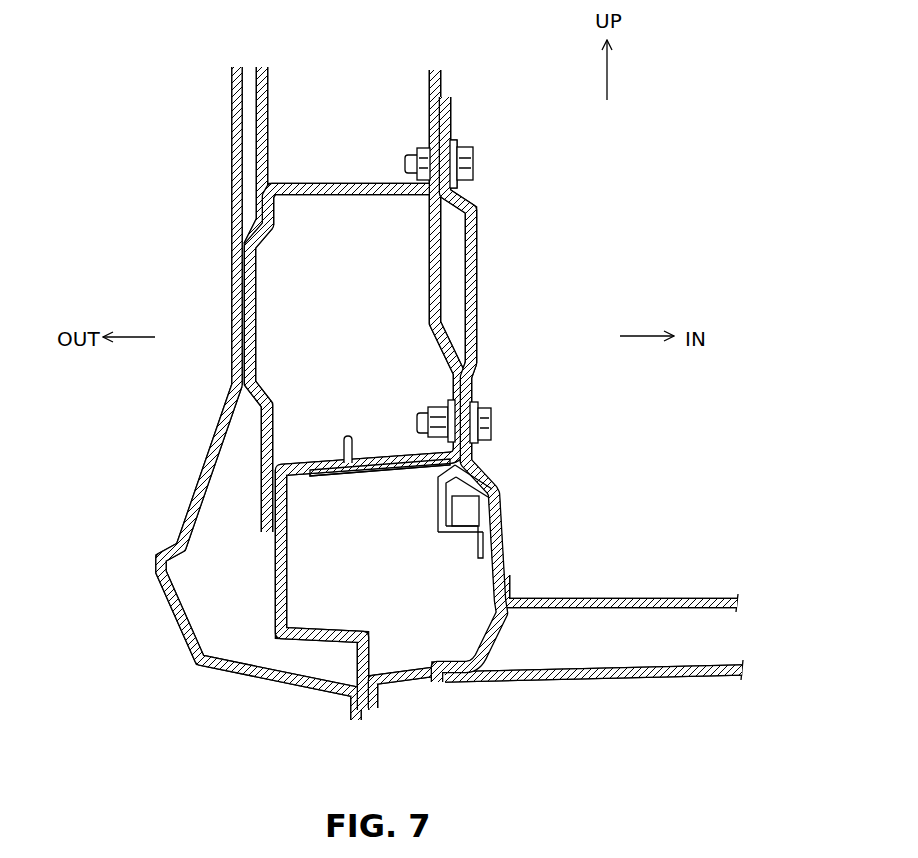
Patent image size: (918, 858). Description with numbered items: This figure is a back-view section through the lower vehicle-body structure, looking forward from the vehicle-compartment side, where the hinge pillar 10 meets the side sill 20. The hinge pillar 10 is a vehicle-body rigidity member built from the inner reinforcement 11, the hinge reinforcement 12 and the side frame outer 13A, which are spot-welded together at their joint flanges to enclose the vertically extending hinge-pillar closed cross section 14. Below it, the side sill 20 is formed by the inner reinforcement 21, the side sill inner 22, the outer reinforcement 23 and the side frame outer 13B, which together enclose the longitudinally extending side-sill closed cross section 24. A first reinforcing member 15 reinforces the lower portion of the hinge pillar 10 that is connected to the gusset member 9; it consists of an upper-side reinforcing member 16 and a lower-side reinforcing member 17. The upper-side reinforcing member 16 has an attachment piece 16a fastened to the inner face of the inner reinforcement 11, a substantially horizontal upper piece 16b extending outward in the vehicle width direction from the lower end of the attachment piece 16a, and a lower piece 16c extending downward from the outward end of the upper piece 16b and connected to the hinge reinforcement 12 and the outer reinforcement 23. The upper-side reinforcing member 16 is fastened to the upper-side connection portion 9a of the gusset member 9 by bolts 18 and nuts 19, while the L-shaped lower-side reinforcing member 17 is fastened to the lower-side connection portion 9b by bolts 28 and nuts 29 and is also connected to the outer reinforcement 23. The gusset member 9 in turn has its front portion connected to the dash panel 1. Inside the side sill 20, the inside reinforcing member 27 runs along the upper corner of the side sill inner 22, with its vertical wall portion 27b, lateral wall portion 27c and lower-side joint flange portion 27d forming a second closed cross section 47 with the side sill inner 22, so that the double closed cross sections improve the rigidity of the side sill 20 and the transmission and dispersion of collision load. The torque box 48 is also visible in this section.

The dash panel 1 is at (627, 597).
The gusset member 9 is at (491, 279).
The upper-side connection portion 9a is at (455, 140).
The lower-side connection portion 9b is at (468, 447).
The hinge pillar 10 is at (221, 393).
The inner reinforcement 11 is at (437, 278).
The hinge reinforcement 12 is at (258, 196).
The side frame outer 13A is at (232, 160).
The side frame outer 13B is at (165, 565).
The hinge-pillar closed cross section 14 is at (361, 295).
The first reinforcing member 15 is at (354, 284).
The upper-side reinforcing member 16 is at (354, 284).
The attachment piece 16a is at (432, 75).
The upper piece 16b is at (340, 197).
The lower piece 16c is at (256, 332).
The lower-side reinforcing member 17 is at (389, 459).
The bolt 18 is at (474, 160).
The nut 19 is at (422, 147).
The side sill 20 is at (481, 585).
The inner reinforcement 21 is at (498, 522).
The side sill inner 22 is at (480, 612).
The outer reinforcement 23 is at (276, 620).
The side-sill closed cross section 24 is at (356, 591).
The inside reinforcing member 27 is at (429, 544).
The vertical wall portion 27b is at (438, 506).
The lateral wall portion 27c is at (441, 545).
The lower-side joint flange portion 27d is at (482, 560).
The bolt 28 is at (493, 420).
The nut 29 is at (432, 406).
The closed cross section 47 is at (463, 526).
The torque box 48 is at (571, 677).